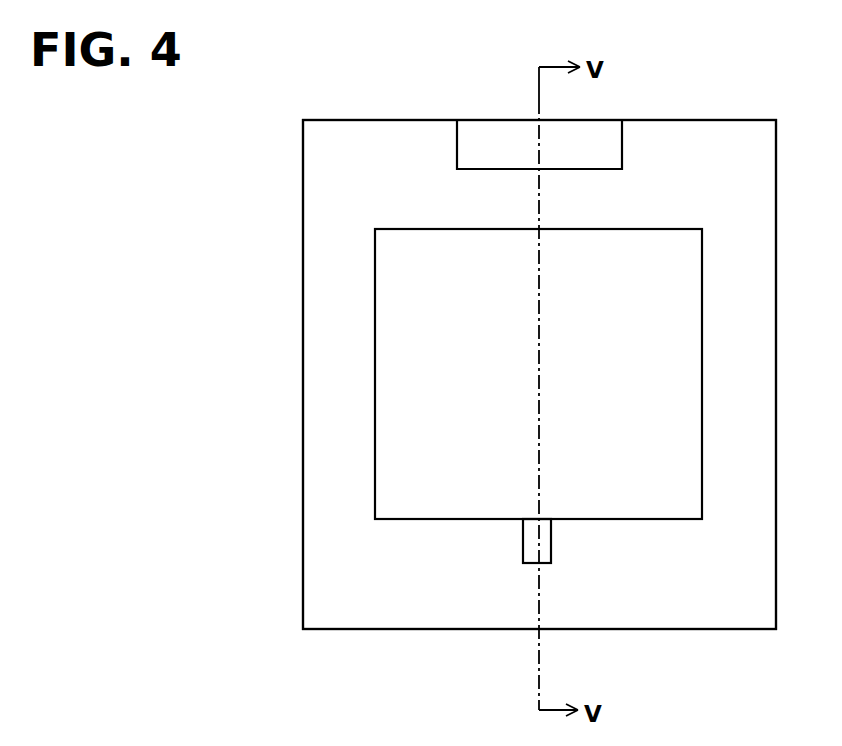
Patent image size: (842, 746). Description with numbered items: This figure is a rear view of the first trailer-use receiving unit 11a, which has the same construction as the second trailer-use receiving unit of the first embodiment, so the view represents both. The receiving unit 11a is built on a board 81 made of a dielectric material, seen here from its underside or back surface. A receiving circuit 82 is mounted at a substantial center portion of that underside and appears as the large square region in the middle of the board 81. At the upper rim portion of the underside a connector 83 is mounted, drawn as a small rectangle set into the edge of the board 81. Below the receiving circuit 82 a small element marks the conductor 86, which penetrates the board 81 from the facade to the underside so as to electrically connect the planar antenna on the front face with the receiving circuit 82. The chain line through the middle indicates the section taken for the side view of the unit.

The first trailer-use receiving unit 11a is at (330, 110).
The board 81 is at (688, 120).
The receiving circuit 82 is at (375, 268).
The connector 83 is at (477, 135).
The conductor 86 is at (551, 546).